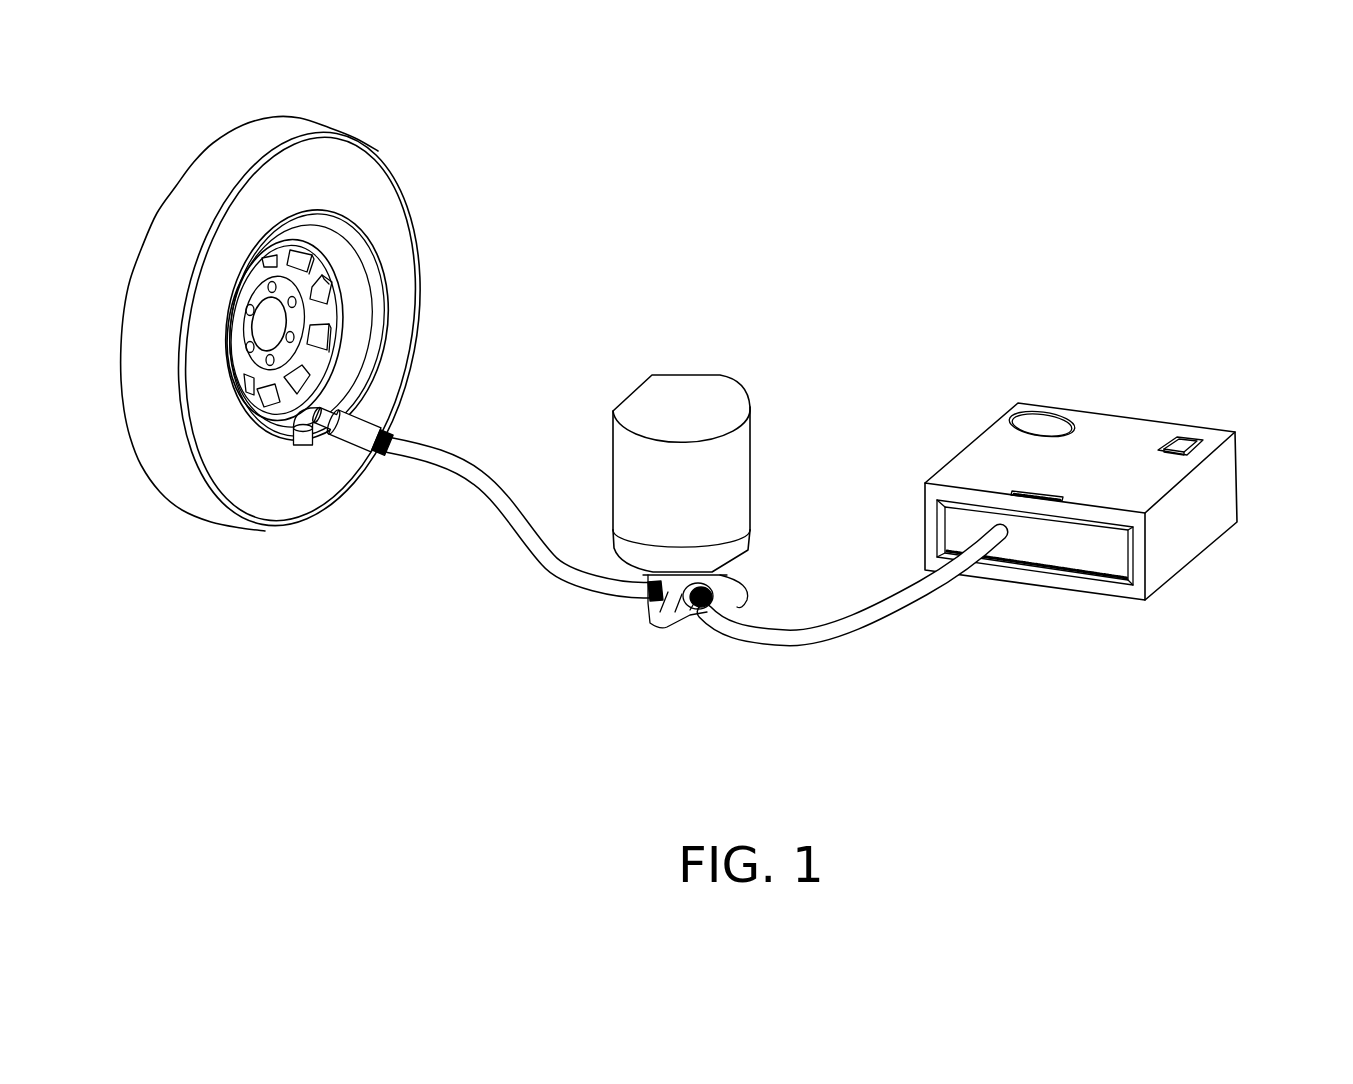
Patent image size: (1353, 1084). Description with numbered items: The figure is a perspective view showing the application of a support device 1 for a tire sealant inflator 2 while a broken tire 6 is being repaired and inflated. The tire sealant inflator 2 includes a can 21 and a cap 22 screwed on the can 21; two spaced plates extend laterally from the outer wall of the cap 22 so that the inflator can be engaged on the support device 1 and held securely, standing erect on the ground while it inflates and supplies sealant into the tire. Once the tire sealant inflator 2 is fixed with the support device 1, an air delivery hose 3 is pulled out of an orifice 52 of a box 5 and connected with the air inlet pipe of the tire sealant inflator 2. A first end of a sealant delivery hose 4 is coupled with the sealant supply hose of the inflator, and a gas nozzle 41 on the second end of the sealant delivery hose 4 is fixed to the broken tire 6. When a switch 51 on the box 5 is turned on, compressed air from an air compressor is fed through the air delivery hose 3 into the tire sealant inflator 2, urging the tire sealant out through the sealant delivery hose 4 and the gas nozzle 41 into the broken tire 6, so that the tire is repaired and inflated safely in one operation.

The connector joint 1 is at (659, 650).
The tire sealant inflator 2 is at (720, 440).
The can 21 is at (728, 484).
The cap 22 is at (660, 616).
The air delivery hose 3 is at (857, 622).
The sealant delivery hose 4 is at (480, 481).
The gas nozzle 41 is at (365, 423).
The box 5 is at (1105, 513).
The switch 51 is at (1185, 443).
The orifice 52 is at (1053, 548).
The broken tire 6 is at (198, 503).